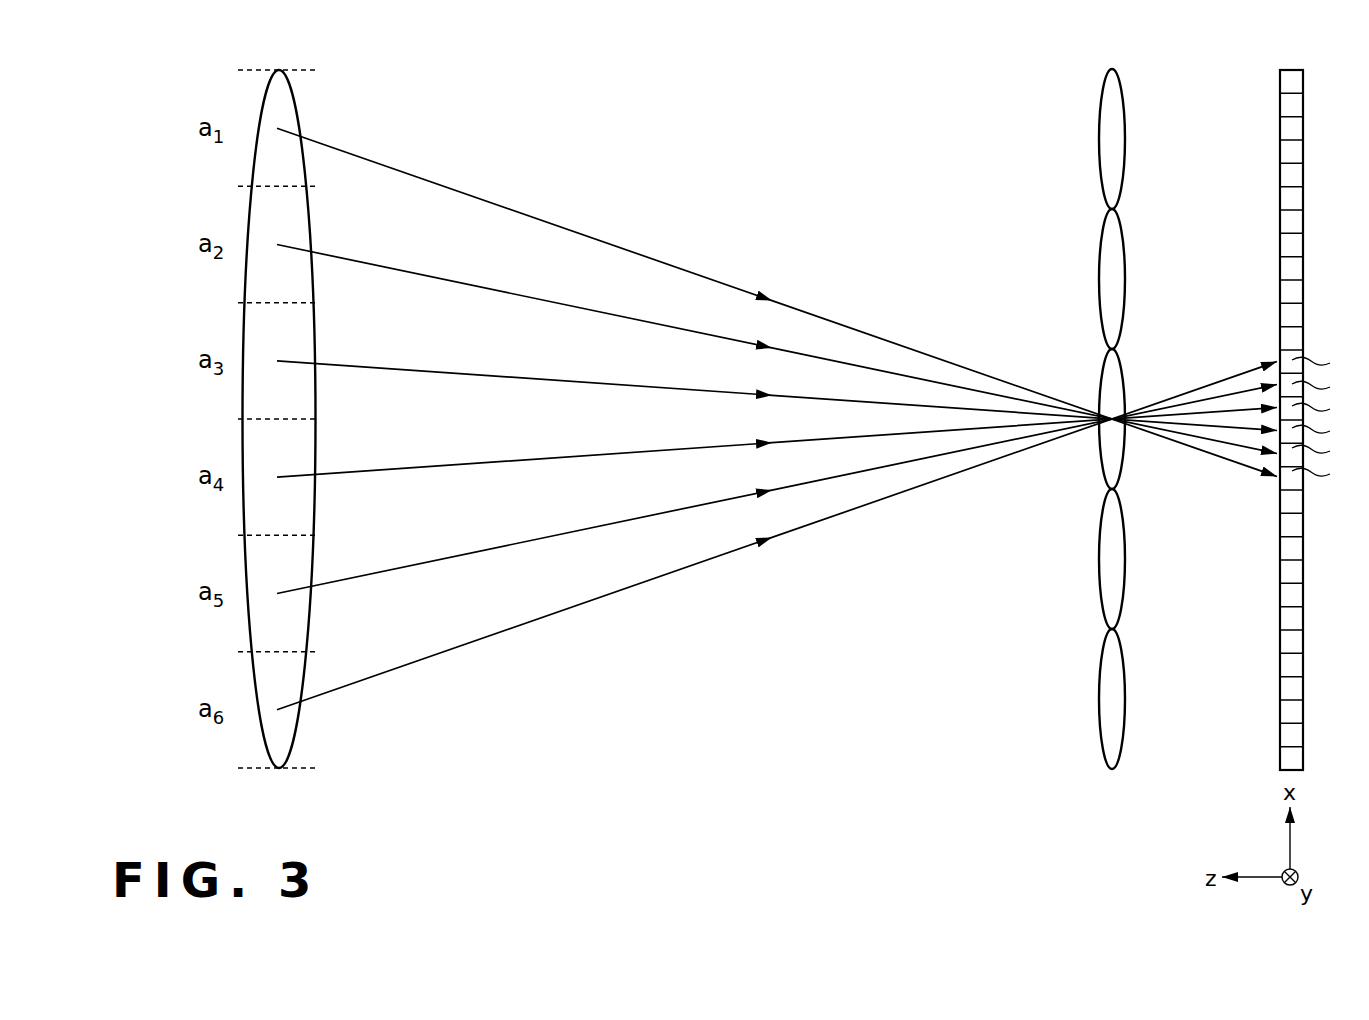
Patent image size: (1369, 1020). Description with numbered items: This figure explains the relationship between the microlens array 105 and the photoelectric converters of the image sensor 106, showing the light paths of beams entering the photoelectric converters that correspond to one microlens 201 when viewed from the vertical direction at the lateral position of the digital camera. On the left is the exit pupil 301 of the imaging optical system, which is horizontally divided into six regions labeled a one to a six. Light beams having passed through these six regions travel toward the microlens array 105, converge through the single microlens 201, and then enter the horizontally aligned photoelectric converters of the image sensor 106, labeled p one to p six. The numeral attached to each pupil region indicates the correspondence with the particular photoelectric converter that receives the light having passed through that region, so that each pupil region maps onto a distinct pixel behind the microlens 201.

The exit pupil 301 is at (299, 110).
The microlens array 105 is at (1081, 396).
The microlens 201 is at (1108, 388).
The image sensor 106 is at (1291, 68).